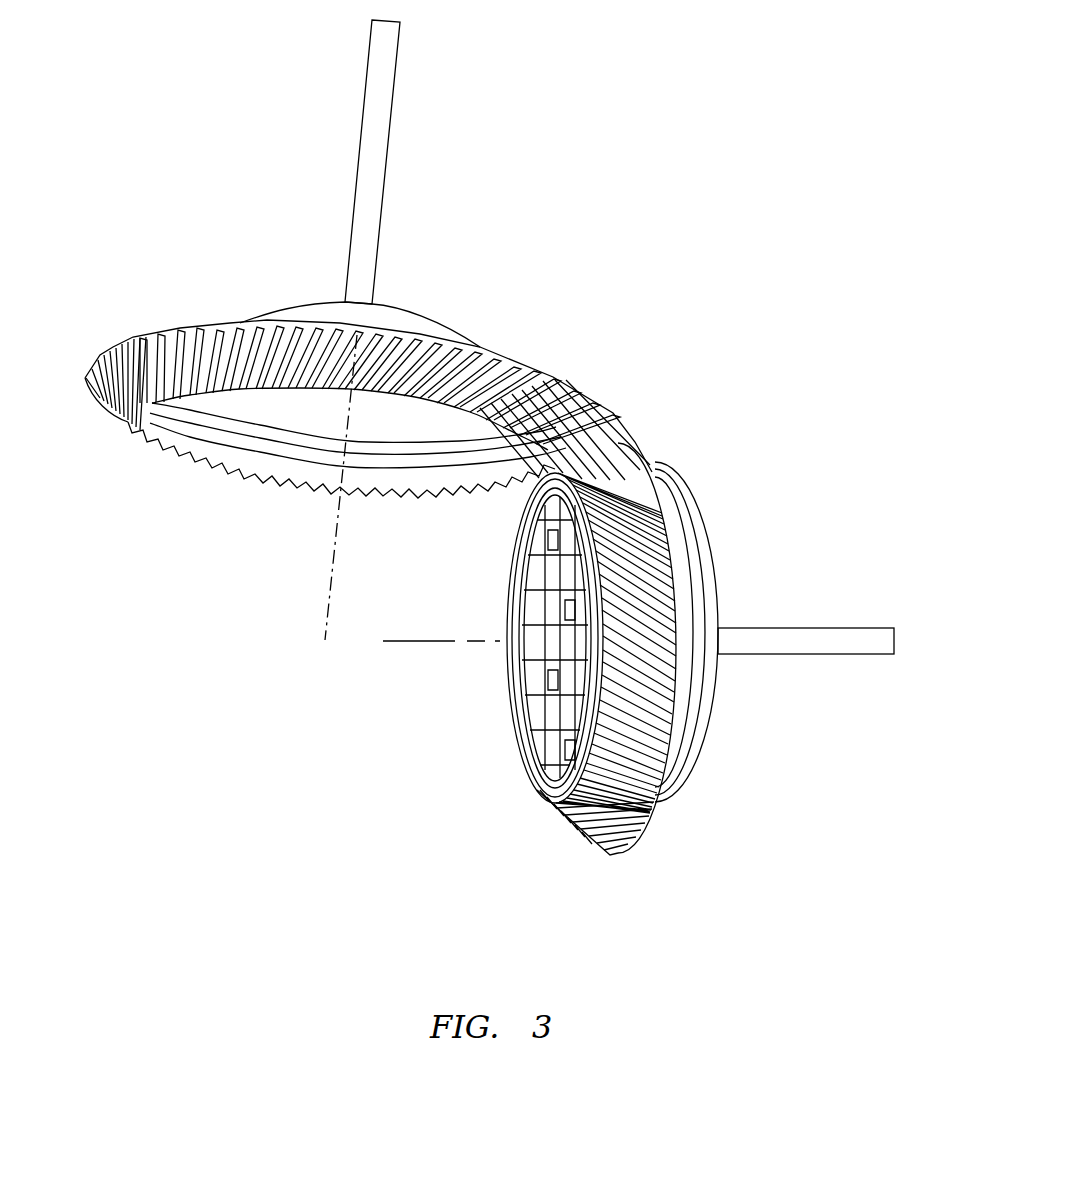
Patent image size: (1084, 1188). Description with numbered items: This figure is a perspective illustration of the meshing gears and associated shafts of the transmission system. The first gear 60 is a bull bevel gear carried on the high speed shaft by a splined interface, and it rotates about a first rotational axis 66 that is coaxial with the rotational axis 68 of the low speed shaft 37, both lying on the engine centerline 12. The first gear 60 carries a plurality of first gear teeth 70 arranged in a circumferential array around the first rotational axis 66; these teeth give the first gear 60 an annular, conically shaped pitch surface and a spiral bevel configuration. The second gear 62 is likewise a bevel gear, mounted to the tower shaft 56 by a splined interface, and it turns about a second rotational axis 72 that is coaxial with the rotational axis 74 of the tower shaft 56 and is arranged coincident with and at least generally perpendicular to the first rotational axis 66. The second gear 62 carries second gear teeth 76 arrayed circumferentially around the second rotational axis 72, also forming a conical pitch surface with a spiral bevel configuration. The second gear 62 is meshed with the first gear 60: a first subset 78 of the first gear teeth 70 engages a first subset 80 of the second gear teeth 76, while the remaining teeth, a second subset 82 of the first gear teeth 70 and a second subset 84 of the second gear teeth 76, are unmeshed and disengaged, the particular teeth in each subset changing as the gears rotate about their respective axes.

The tower shaft 56 is at (395, 97).
The second gear 62 is at (375, 396).
The second subset of the second gear teeth 84 is at (142, 462).
The second gear teeth 76 is at (250, 470).
The first subset of the second gear teeth 80 is at (627, 410).
The first subset of the first gear teeth 78 is at (628, 424).
The first gear teeth 70 is at (647, 476).
The low speed shaft 37 is at (818, 628).
The first gear 60 is at (634, 663).
The second subset of the first gear teeth 82 is at (590, 866).
The second rotational axis 72 is at (269, 487).
The rotational axis of the tower shaft 74 is at (333, 591).
The centerline 12 is at (423, 691).
The first rotational axis 66 is at (423, 691).
The rotational axis of the low speed shaft 68 is at (418, 652).